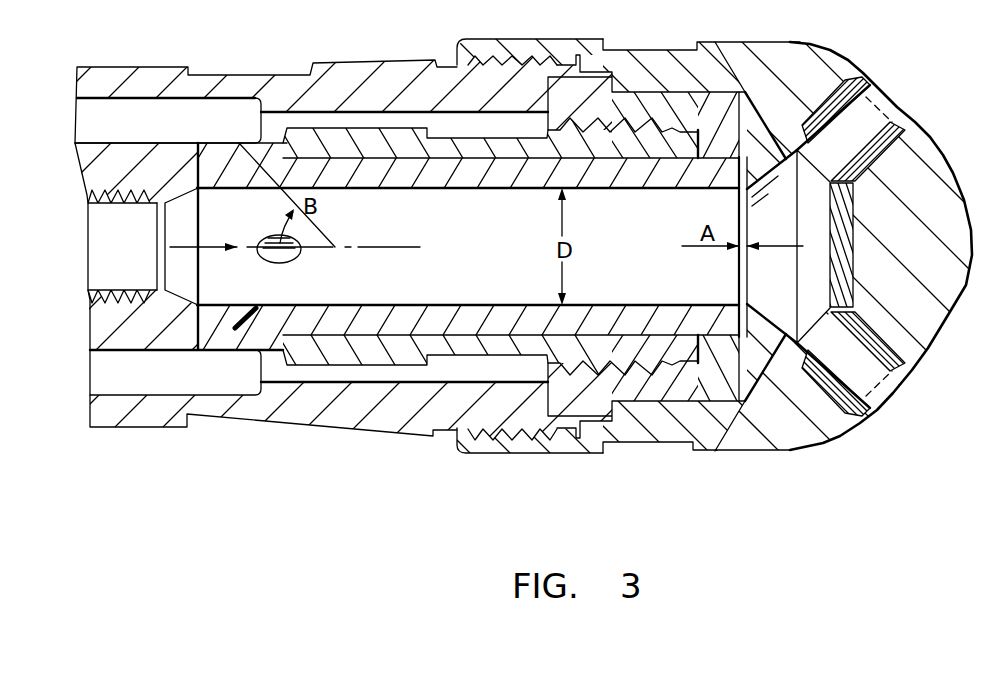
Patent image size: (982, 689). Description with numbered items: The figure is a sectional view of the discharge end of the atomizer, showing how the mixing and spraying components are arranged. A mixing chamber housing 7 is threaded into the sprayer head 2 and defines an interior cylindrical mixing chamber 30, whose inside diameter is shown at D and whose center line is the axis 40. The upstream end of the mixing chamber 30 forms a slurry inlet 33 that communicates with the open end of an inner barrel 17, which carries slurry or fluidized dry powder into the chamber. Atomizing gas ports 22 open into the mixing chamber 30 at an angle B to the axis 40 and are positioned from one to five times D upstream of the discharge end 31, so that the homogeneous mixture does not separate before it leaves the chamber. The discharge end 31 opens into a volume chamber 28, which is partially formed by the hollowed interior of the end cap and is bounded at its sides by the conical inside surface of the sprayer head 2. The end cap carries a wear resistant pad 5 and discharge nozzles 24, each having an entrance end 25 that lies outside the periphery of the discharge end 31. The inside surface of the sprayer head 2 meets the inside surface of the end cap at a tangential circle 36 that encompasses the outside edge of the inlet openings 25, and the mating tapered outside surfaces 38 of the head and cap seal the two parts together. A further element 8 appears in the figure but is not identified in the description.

The sprayer head 2 is at (673, 387).
The wear resistant pad 5 is at (845, 266).
The mixing chamber housing 7 is at (110, 338).
The retaining nut 8 is at (488, 415).
The inner barrel 17 is at (110, 293).
The atomizing gas ports 22 is at (332, 286).
The discharge nozzles 24 is at (866, 372).
The entrance end of nozzle 25 is at (800, 183).
The volume chamber 28 is at (787, 345).
The mixing chamber 30 is at (370, 300).
The discharge end 31 is at (739, 285).
The slurry inlet 33 is at (202, 280).
The tangential circle 36 is at (800, 100).
The mating tapered outside surfaces 38 is at (753, 93).
The axis 40 is at (387, 247).